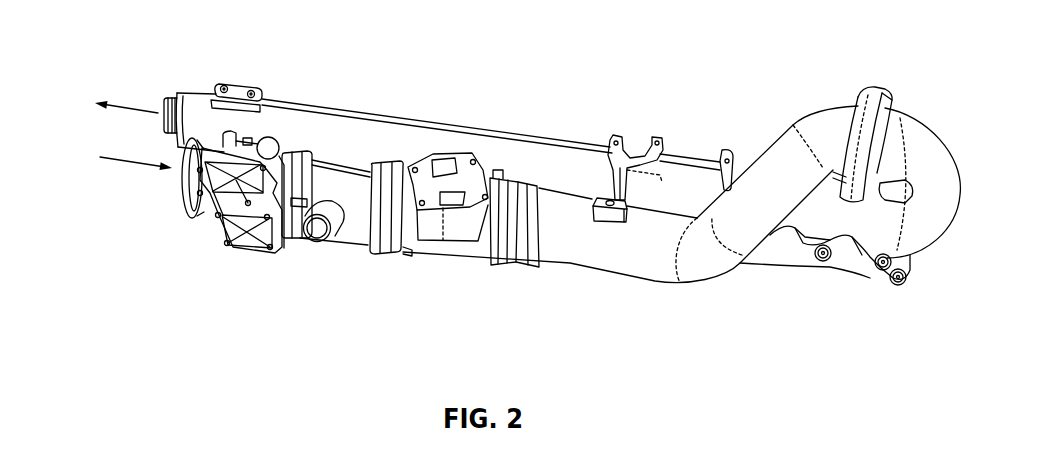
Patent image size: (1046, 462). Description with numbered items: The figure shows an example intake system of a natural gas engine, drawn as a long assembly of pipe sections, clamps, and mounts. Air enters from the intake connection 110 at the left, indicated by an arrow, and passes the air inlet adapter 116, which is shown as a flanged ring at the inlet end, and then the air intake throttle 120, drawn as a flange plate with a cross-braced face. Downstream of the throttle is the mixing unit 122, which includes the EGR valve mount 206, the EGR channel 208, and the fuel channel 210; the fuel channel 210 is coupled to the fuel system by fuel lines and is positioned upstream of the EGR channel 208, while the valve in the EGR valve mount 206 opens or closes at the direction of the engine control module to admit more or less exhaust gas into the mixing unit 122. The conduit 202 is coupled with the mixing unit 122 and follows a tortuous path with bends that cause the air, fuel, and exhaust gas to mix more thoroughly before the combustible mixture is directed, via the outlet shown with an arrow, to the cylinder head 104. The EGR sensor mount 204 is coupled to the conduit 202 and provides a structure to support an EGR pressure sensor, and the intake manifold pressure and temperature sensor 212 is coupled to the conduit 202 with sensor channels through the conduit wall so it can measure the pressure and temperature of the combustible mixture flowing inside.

The cylinder head 104 is at (125, 105).
The intake connection 110 is at (127, 167).
The air inlet adapter 116 is at (183, 218).
The air intake throttle 120 is at (222, 249).
The mixing unit 122 is at (357, 217).
The conduit 202 is at (503, 148).
The EGR sensor mount 204 is at (620, 142).
The EGR valve mount 206 is at (414, 247).
The EGR channel 208 is at (470, 208).
The fuel channel 210 is at (295, 244).
The intake manifold pressure and temperature sensor 212 is at (632, 219).